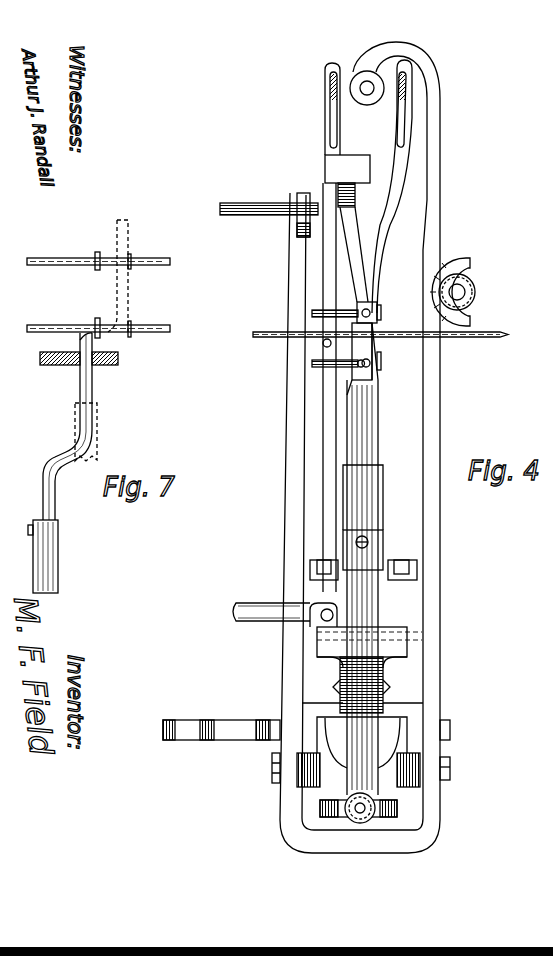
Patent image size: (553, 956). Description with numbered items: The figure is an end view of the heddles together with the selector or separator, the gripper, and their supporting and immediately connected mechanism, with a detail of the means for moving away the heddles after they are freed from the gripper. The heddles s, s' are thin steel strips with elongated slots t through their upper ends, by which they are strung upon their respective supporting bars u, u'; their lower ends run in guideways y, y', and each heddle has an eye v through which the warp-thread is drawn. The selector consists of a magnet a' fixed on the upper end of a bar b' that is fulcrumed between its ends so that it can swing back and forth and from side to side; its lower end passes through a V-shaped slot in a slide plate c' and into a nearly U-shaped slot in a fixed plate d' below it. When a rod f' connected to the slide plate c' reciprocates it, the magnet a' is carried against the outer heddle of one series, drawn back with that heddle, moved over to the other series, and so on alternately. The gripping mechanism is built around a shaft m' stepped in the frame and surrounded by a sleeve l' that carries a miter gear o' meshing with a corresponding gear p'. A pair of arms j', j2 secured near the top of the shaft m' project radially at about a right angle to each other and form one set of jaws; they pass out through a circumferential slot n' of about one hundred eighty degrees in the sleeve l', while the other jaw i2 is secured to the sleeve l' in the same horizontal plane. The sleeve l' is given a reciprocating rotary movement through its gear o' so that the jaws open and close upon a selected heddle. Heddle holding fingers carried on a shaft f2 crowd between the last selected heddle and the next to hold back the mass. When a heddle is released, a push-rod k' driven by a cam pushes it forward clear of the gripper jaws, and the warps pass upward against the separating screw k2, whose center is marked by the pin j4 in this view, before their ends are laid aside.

In FIG. 4, the supporting bar u is at (314, 109).
In FIG. 7, the supporting bar u is at (100, 250).
In FIG. 4, the slot t is at (315, 109).
In FIG. 4, the shaft f2 is at (367, 84).
In FIG. 4, the supporting bar u' is at (433, 107).
In FIG. 7, the supporting bar u' is at (108, 321).
In FIG. 4, the magnet a' is at (347, 214).
In FIG. 4, the push-rod k' is at (269, 208).
In FIG. 7, the push-rod k' is at (70, 463).
In FIG. 4, the bar b' is at (417, 186).
In FIG. 4, the heddle s is at (302, 387).
In FIG. 7, the heddle s is at (86, 253).
In FIG. 4, the heddle s' is at (391, 267).
In FIG. 7, the heddle s' is at (86, 322).
In FIG. 4, the shaft m' is at (321, 332).
In FIG. 4, the arm j2 is at (268, 398).
In FIG. 4, the arm i2 is at (381, 313).
In FIG. 4, the wheel pin j4 is at (457, 292).
In FIG. 4, the separating screw k2 is at (478, 292).
In FIG. 4, the eye v is at (327, 343).
In FIG. 4, the horizontal rod e is at (475, 338).
In FIG. 4, the circumferential slot n' is at (307, 420).
In FIG. 4, the arm j' is at (387, 359).
In FIG. 4, the sleeve l' is at (371, 587).
In FIG. 4, the guideway y is at (291, 571).
In FIG. 4, the guideway y' is at (428, 571).
In FIG. 4, the rod f' is at (279, 624).
In FIG. 4, the slide plate c' is at (395, 632).
In FIG. 4, the fixed plate d' is at (394, 673).
In FIG. 4, the miter gear o' is at (373, 685).
In FIG. 4, the gear p' is at (398, 734).